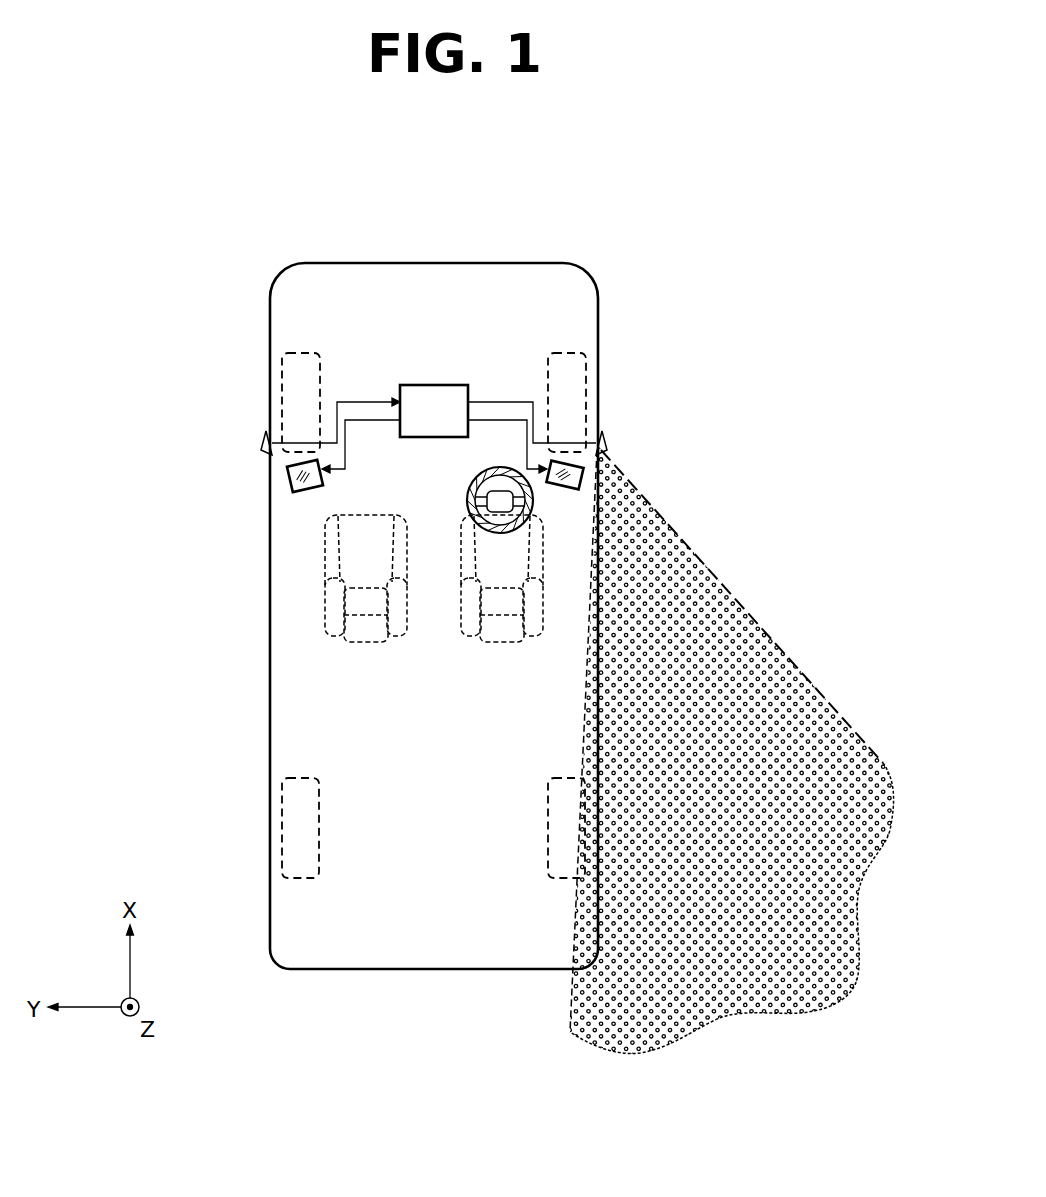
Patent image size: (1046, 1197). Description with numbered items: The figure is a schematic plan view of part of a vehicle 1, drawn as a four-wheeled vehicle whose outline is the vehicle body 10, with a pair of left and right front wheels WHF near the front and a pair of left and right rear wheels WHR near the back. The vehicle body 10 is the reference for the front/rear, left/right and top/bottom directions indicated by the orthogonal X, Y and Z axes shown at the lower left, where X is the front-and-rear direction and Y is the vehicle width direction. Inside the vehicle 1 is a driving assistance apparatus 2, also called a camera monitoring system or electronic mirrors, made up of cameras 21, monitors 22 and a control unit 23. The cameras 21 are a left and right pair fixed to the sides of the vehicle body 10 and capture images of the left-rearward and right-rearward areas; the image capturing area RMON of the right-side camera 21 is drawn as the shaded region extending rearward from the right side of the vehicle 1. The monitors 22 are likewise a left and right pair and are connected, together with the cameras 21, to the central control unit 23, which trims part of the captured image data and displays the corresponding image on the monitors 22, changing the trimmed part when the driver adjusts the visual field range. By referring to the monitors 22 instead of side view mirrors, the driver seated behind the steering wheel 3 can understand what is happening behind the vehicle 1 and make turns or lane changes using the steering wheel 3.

The vehicle 1 is at (288, 208).
The driving assistance apparatus 2 is at (503, 305).
The vehicle body 10 is at (270, 318).
The front wheels WHF is at (282, 372).
The rear wheels WHR is at (282, 800).
The cameras 21 is at (262, 444).
The monitors 22 is at (288, 470).
The control unit 23 is at (434, 385).
The steering wheel 3 is at (472, 484).
The image capturing area RMON is at (750, 670).